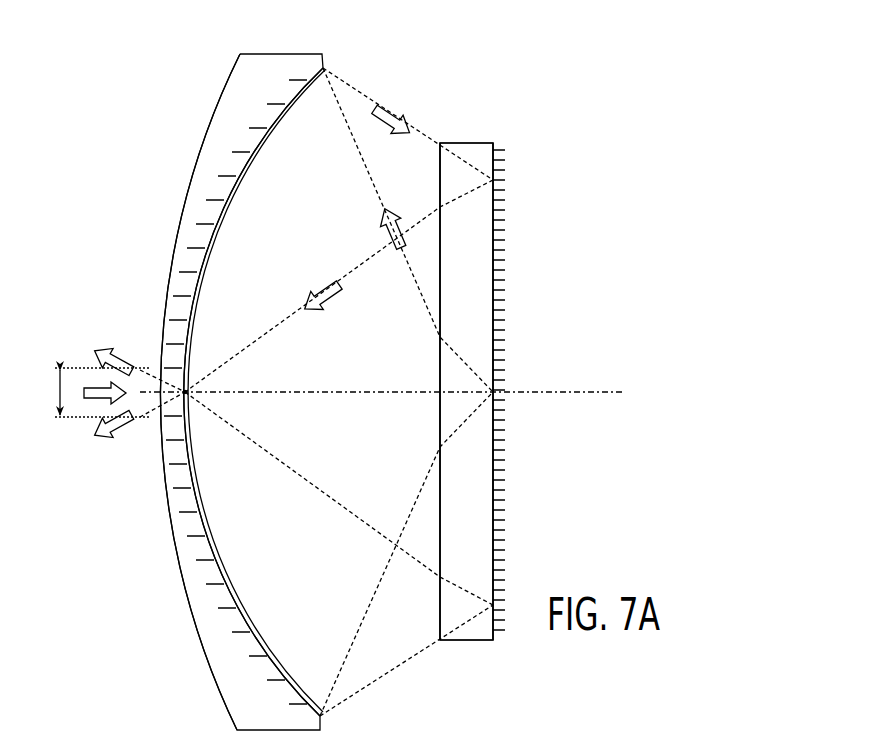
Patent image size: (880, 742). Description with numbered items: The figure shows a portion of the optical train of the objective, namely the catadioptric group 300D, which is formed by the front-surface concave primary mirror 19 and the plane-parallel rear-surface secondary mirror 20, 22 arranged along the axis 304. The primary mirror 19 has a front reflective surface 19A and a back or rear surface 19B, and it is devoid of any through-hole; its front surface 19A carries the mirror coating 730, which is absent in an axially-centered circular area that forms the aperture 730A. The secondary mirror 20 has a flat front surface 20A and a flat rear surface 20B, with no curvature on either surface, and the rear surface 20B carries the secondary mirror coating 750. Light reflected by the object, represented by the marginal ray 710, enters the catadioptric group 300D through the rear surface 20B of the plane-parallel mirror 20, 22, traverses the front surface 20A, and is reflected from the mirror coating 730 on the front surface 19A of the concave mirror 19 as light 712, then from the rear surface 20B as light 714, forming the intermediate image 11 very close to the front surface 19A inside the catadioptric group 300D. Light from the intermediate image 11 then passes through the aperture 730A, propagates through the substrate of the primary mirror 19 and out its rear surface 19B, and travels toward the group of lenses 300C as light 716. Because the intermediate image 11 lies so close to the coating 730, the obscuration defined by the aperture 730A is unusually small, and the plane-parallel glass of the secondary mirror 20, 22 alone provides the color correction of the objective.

The concave primary mirror 19 is at (265, 725).
The front reflective surface 19A is at (306, 97).
The rear surface 19B is at (207, 103).
The intermediate image 11 is at (192, 382).
The marginal ray 710 is at (385, 238).
The light reflected from primary mirror 712 is at (381, 126).
The light reflected from secondary mirror 714 is at (325, 284).
The light toward lens group 716 is at (127, 361).
The mirror coating 730 is at (246, 639).
The aperture 730A is at (57, 392).
The group of lenses 300C is at (95, 403).
The catadioptric group 300D is at (572, 83).
The axis 304 is at (560, 394).
The secondary mirror 20 is at (476, 156).
The plane-parallel mirror 22 is at (466, 391).
The front surface 20A is at (435, 611).
The rear reflective surface 20B is at (490, 628).
The secondary mirror coating 750 is at (575, 738).